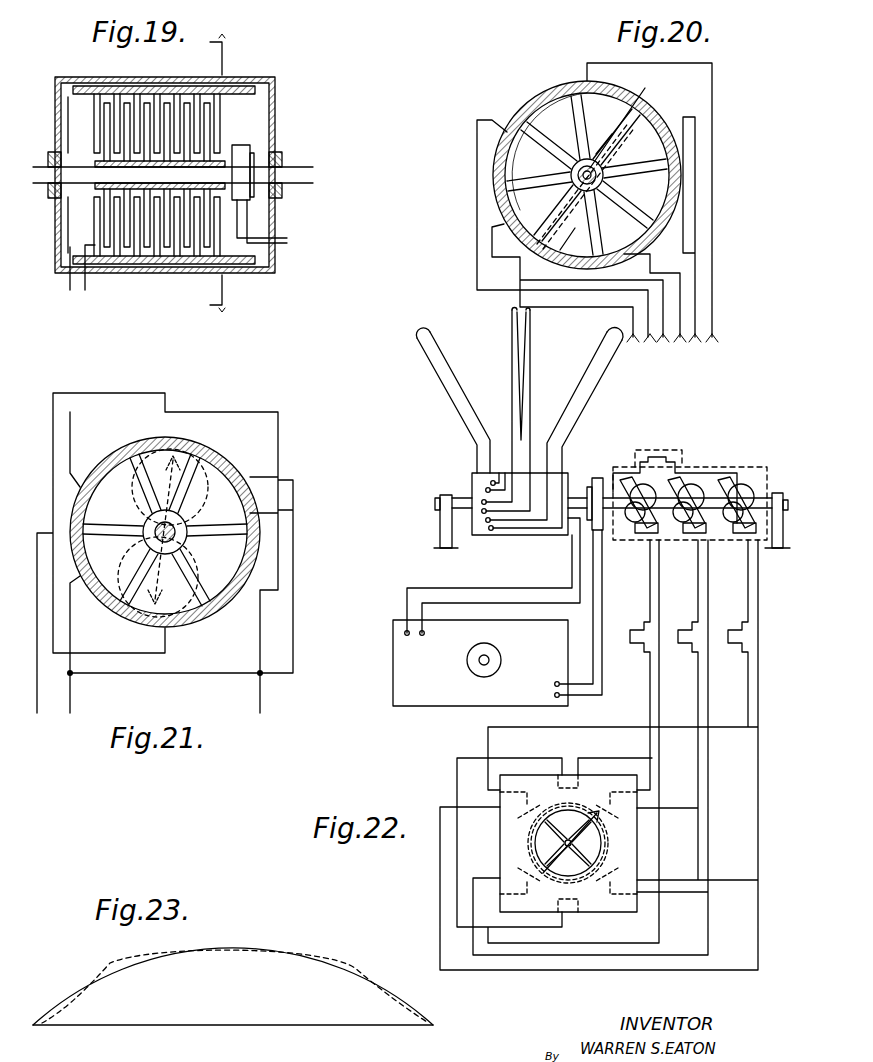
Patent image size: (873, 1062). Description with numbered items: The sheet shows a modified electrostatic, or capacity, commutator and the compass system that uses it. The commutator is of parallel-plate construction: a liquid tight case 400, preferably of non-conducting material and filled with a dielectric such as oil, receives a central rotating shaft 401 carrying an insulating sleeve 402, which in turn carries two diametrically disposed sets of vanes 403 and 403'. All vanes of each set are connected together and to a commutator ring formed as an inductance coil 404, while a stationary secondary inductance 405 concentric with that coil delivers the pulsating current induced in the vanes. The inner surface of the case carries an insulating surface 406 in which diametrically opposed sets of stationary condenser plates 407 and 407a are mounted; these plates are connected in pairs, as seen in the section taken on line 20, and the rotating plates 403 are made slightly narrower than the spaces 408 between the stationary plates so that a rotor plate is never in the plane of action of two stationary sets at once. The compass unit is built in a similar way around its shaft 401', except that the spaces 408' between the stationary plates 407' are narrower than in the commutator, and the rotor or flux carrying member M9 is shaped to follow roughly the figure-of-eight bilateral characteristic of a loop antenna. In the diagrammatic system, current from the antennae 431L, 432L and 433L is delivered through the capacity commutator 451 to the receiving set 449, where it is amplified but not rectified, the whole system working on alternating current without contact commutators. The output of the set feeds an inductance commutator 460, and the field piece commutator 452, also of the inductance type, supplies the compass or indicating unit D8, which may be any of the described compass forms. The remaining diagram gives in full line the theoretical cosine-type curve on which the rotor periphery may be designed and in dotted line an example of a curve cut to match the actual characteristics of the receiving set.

In FIG. 19, the liquid tight case 400 is at (68, 77).
In FIG. 20, the liquid tight case 400 is at (488, 206).
In FIG. 19, the central rotating shaft 401 is at (182, 163).
In FIG. 20, the central rotating shaft 401 is at (666, 175).
In FIG. 19, the insulating sleeve 402 is at (215, 156).
In FIG. 20, the insulating sleeve 402 is at (500, 174).
In FIG. 19, the vanes 403 is at (182, 131).
In FIG. 20, the vanes 403 is at (596, 134).
In FIG. 19, the vanes 403' is at (191, 246).
In FIG. 20, the vanes 403' is at (555, 255).
In FIG. 19, the inductance coil 404 is at (262, 157).
In FIG. 19, the stationary secondary inductance 405 is at (253, 152).
In FIG. 19, the insulating surface 406 is at (258, 80).
In FIG. 20, the insulating surface 406 is at (668, 196).
In FIG. 19, the stationary condenser plates 407 is at (157, 105).
In FIG. 20, the stationary condenser plates 407 is at (587, 158).
In FIG. 19, the stationary condenser plates 407a is at (173, 245).
In FIG. 20, the stationary condenser plates 407a is at (606, 260).
In FIG. 20, the spaces 408 is at (604, 163).
In FIG. 19, the section line 20 is at (209, 173).
In FIG. 21, the stationary plates 407' is at (165, 523).
In FIG. 21, the spaces 408' is at (189, 528).
In FIG. 21, the shaft 401' is at (241, 514).
In FIG. 21, the rotor or flux carrying member M9 is at (240, 472).
In FIG. 22, the antenna 431L is at (445, 383).
In FIG. 22, the antenna 432L is at (531, 327).
In FIG. 22, the antenna 433L is at (590, 392).
In FIG. 22, the receiving set 449 is at (396, 697).
In FIG. 22, the capacity commutator 451 is at (474, 478).
In FIG. 22, the field piece commutator 452 is at (706, 486).
In FIG. 22, the inductance commutator 460 is at (594, 477).
In FIG. 22, the compass D8 is at (489, 866).